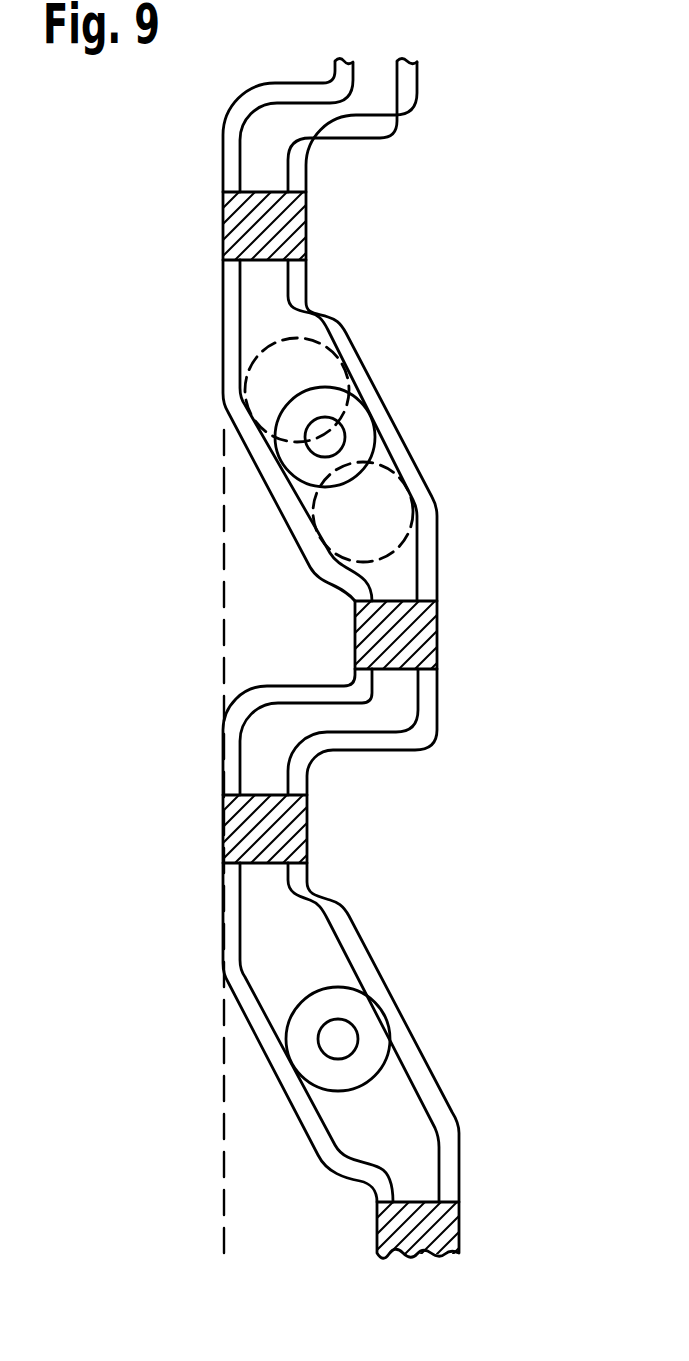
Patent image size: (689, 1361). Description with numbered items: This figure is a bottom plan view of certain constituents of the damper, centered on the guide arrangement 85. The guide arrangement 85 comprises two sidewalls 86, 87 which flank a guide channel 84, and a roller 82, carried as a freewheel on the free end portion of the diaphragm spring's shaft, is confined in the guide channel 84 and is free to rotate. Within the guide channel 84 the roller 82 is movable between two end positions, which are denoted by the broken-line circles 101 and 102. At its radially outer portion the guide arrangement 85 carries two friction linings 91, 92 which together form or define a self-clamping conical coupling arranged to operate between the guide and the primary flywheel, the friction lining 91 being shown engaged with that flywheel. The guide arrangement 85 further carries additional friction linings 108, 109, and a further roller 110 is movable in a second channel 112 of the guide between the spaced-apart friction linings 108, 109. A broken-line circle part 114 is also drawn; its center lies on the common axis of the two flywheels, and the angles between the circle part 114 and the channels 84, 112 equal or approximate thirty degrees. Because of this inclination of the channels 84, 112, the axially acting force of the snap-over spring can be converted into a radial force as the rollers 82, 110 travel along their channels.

The roller 82 is at (342, 422).
The guide channel 84 is at (400, 563).
The guide arrangement 85 is at (398, 769).
The sidewall 86 is at (263, 451).
The sidewall 87 is at (393, 460).
The friction lining 91 is at (250, 228).
The friction lining 92 is at (413, 633).
The broken-line circle 101 is at (300, 336).
The broken-line circle 102 is at (438, 537).
The friction lining 108 is at (283, 832).
The friction lining 109 is at (445, 1239).
The roller 110 is at (373, 1023).
The second channel 112 is at (399, 1126).
The circle part 114 is at (223, 1236).